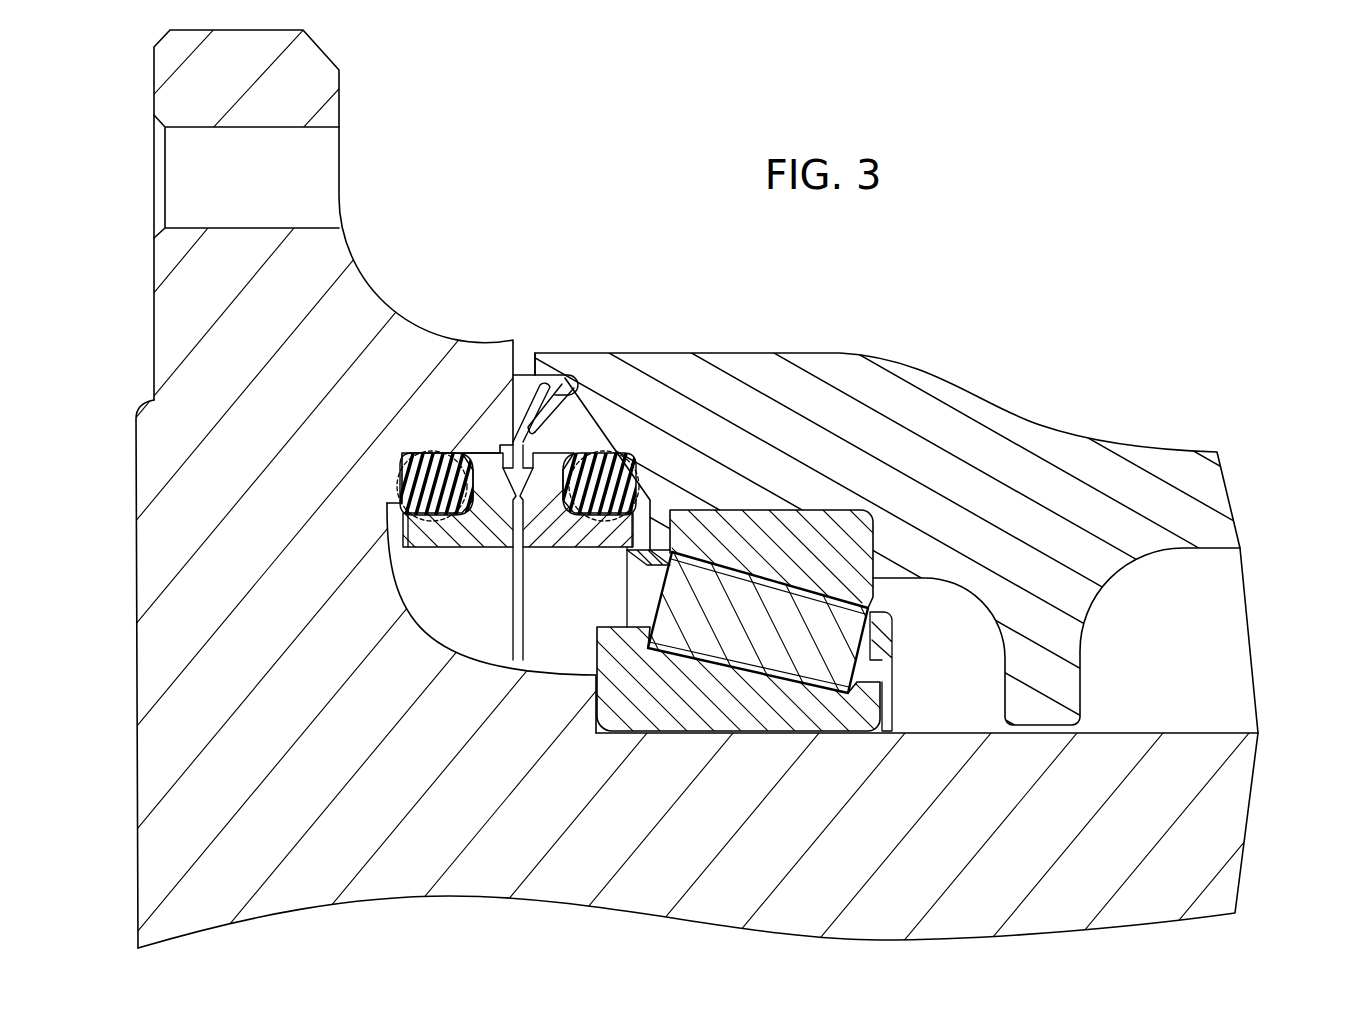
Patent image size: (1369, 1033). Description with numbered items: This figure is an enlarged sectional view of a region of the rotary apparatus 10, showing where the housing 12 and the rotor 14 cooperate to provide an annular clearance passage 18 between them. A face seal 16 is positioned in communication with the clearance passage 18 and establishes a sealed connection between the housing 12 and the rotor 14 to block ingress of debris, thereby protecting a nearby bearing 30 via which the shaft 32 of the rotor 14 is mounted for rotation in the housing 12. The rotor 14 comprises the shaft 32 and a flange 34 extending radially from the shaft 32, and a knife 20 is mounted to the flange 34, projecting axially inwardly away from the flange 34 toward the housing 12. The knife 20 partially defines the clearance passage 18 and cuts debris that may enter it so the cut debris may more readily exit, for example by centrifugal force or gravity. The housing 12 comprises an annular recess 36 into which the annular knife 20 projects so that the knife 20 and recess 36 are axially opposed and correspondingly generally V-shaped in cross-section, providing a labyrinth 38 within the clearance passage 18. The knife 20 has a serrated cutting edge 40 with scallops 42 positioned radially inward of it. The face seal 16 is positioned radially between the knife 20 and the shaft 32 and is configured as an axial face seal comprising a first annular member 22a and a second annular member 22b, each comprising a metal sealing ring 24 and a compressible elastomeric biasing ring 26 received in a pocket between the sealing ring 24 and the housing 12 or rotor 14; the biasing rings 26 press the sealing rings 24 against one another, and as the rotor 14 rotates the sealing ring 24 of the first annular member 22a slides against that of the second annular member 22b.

The rotary apparatus 10 is at (1110, 131).
The housing 12 is at (988, 364).
The rotor 14 is at (402, 252).
The face seal 16 is at (447, 599).
The clearance passage 18 is at (520, 348).
The knife 20 is at (545, 390).
The first annular member 22a is at (444, 559).
The second annular member 22b is at (556, 646).
The sealing ring 24 is at (545, 525).
The compressible biasing ring 26 is at (433, 483).
The bearing 30 is at (822, 547).
The shaft 32 is at (1210, 824).
The flange 34 is at (300, 88).
The annular recess 36 is at (606, 353).
The labyrinth 38 is at (560, 372).
The serrated cutting edge 40 is at (578, 395).
The scallops 42 is at (560, 423).